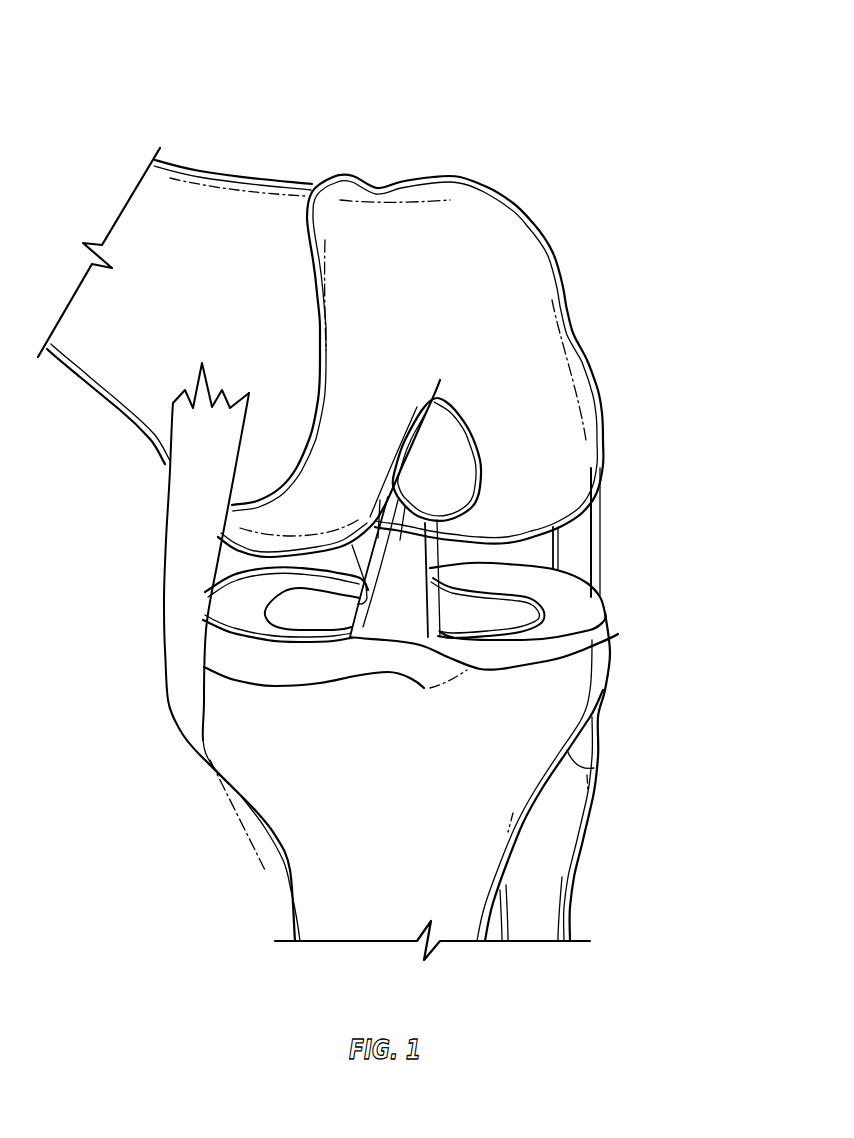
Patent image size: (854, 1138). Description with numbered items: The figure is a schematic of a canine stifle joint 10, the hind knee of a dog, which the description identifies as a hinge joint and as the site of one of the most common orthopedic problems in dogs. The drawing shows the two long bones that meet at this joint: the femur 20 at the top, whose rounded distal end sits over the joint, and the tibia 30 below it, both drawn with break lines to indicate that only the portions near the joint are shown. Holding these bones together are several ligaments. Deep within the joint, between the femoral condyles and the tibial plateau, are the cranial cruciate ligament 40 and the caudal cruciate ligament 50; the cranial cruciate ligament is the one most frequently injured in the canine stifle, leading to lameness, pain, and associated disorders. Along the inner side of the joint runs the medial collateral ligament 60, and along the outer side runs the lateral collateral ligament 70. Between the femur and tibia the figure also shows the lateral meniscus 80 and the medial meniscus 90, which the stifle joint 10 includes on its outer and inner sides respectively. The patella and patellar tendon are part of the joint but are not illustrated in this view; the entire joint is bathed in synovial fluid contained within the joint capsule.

The canine stifle joint 10 is at (153, 58).
The femur 20 is at (167, 212).
The tibia 30 is at (253, 770).
The cranial cruciate ligament 40 is at (418, 562).
The caudal cruciate ligament 50 is at (382, 538).
The medial collateral ligament 60 is at (181, 611).
The lateral collateral ligament 70 is at (578, 557).
The lateral meniscus 80 is at (587, 633).
The medial meniscus 90 is at (222, 652).